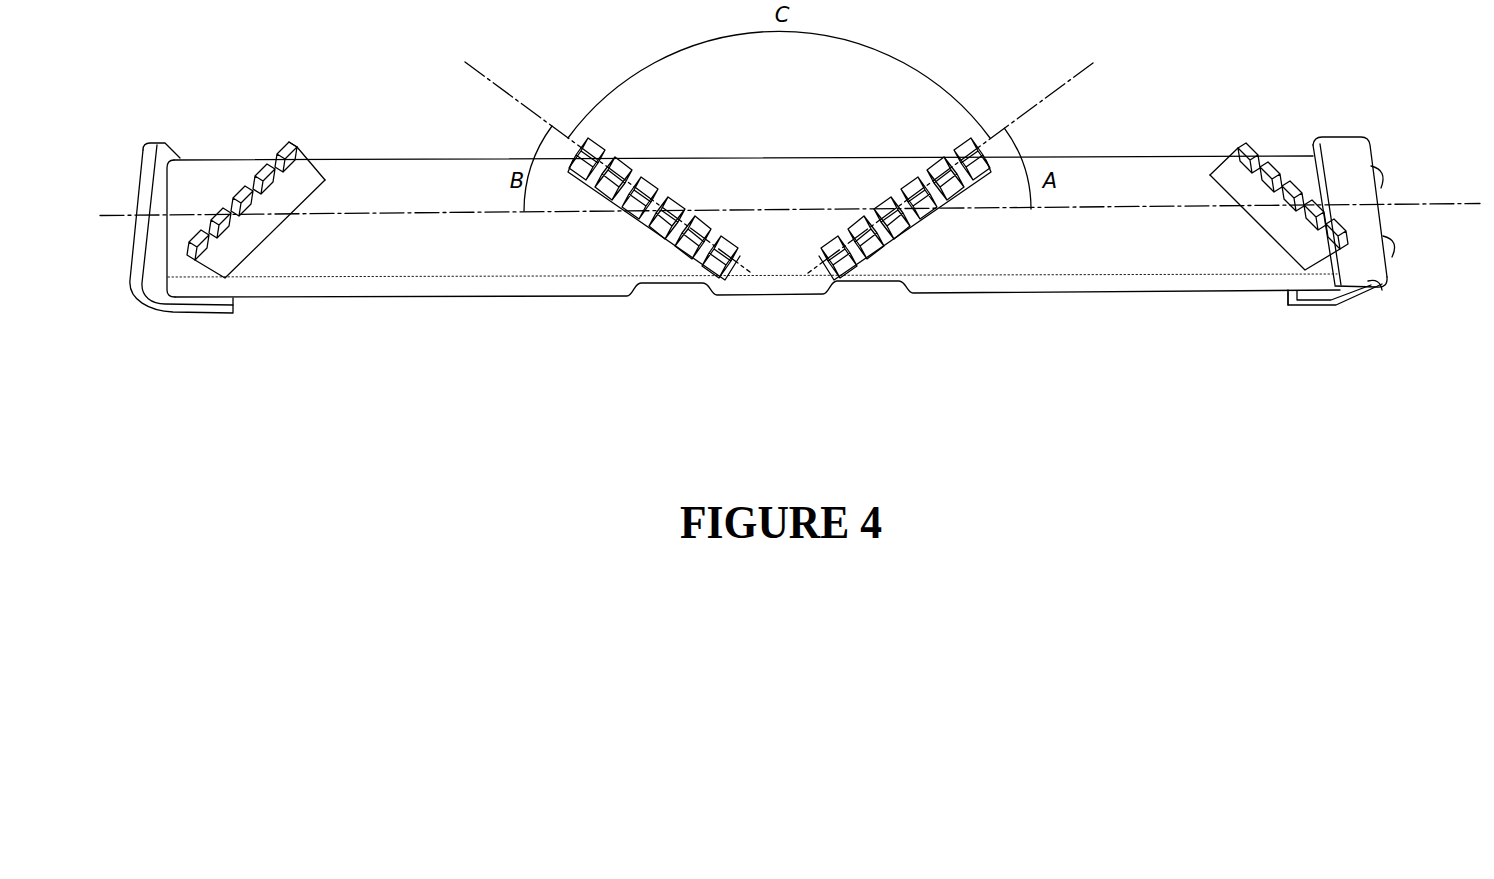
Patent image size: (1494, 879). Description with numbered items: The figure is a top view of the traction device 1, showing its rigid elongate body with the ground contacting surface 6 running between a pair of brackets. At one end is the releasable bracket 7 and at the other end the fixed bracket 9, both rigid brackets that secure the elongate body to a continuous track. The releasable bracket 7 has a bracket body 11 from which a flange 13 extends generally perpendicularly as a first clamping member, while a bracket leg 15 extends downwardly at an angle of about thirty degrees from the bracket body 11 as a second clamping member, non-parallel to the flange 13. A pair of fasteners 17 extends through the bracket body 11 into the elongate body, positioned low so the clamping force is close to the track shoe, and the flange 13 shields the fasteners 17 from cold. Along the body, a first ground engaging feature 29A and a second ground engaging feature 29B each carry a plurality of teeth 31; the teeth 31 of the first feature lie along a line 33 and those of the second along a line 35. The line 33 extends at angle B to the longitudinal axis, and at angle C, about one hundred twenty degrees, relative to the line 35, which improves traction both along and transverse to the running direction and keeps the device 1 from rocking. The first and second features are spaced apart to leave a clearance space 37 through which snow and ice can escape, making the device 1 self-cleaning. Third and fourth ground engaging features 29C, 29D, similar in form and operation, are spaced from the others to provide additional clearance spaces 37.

The device 1 is at (535, 385).
The ground contacting surface 6 is at (437, 184).
The releasable bracket 7 is at (1348, 146).
The fixed bracket 9 is at (144, 147).
The bracket body 11 is at (1366, 293).
The flange 13 is at (1387, 280).
The bracket leg 15 is at (1308, 306).
The fastener 17 is at (1380, 177).
The first ground engaging feature 29A is at (712, 266).
The second ground engaging feature 29B is at (870, 255).
The third ground engaging feature 29C is at (240, 250).
The fourth ground engaging feature 29D is at (1225, 170).
The teeth 31 is at (263, 158).
The line 33 is at (594, 154).
The line 35 is at (970, 156).
The clearance space 37 is at (418, 267).